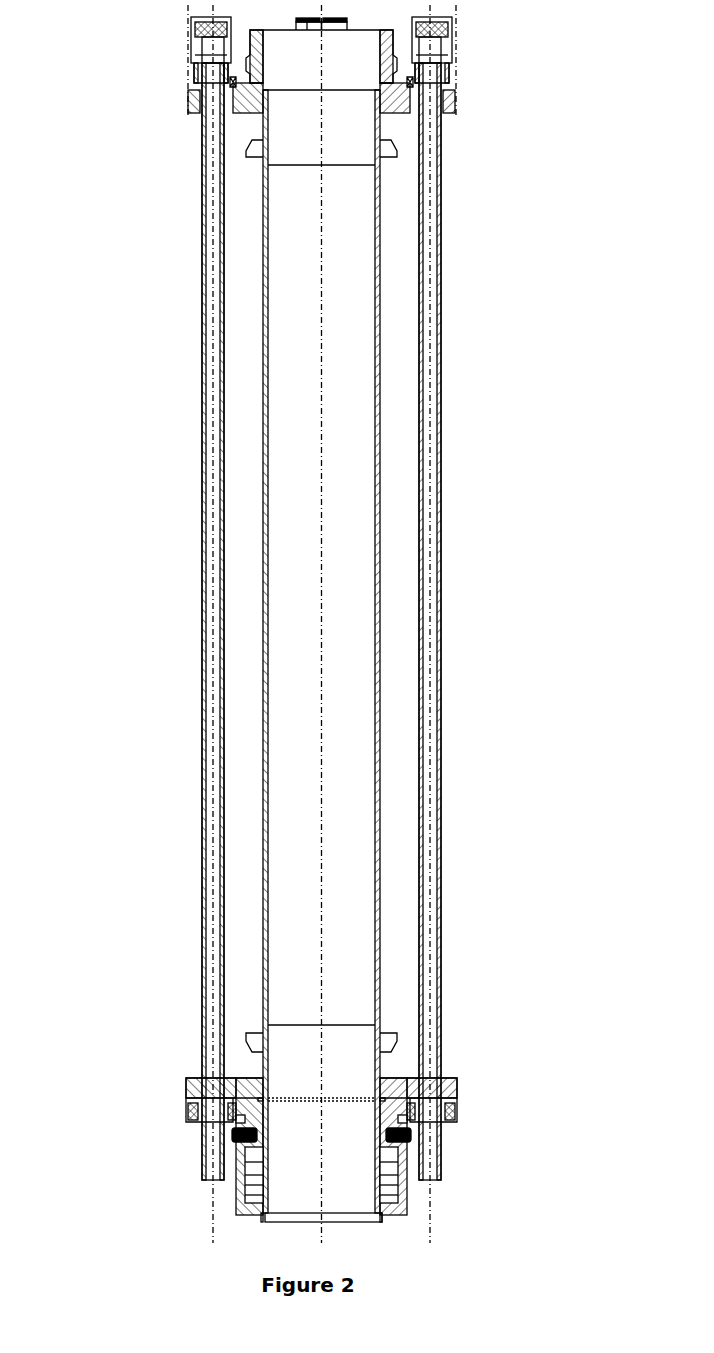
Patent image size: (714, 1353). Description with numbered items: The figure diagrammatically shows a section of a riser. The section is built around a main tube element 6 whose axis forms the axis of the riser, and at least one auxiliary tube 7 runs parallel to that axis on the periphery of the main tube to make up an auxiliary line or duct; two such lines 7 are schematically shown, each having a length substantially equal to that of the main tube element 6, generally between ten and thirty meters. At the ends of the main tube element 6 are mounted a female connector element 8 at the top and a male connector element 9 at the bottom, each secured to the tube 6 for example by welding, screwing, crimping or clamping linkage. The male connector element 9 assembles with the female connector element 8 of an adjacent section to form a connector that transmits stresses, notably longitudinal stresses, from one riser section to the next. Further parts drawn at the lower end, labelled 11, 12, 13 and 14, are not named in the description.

The main tube element 6 is at (381, 437).
The auxiliary tube element 7 is at (442, 478).
The female connector element 8 is at (385, 108).
The male connector element 9 is at (390, 1085).
The bottom end block 11 is at (403, 1148).
The seal 12 is at (230, 1137).
The nut 13 is at (197, 63).
The retaining ring 14 is at (203, 1148).